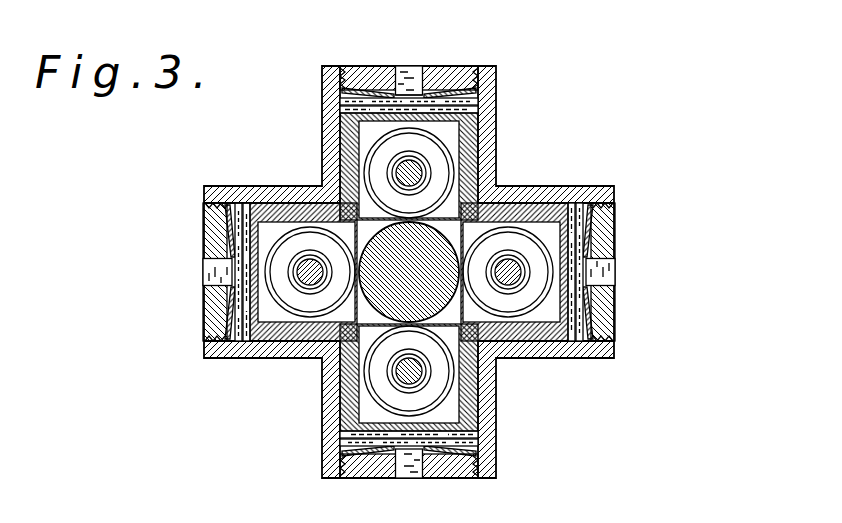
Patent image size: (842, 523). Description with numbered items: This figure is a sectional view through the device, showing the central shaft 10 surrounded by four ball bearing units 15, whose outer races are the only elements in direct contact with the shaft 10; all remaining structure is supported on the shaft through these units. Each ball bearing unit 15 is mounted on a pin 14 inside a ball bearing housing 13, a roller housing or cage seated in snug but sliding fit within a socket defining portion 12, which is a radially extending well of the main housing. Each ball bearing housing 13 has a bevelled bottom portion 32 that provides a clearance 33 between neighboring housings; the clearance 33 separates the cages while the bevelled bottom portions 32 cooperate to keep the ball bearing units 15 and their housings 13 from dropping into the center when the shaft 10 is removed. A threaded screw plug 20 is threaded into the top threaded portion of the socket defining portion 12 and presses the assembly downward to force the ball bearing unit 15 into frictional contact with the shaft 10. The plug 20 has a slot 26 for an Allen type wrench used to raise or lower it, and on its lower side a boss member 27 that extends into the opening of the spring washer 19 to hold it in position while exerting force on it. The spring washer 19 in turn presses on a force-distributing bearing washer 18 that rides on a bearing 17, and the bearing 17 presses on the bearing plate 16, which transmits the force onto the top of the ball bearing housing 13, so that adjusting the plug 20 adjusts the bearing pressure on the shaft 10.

The central shaft 10 is at (441, 246).
The socket defining portion 12 is at (494, 104).
The ball bearing housing 13 is at (468, 140).
The pin 14 is at (511, 265).
The ball bearing unit 15 is at (452, 172).
The bearing plate 16 is at (342, 132).
The bearing 17 is at (342, 104).
The bearing washer 18 is at (361, 87).
The spring washer 19 is at (470, 78).
The threaded screw plug 20 is at (381, 68).
The slot 26 is at (410, 70).
The boss member 27 is at (430, 93).
The bevelled bottom portion 32 is at (340, 205).
The clearance 33 is at (337, 202).